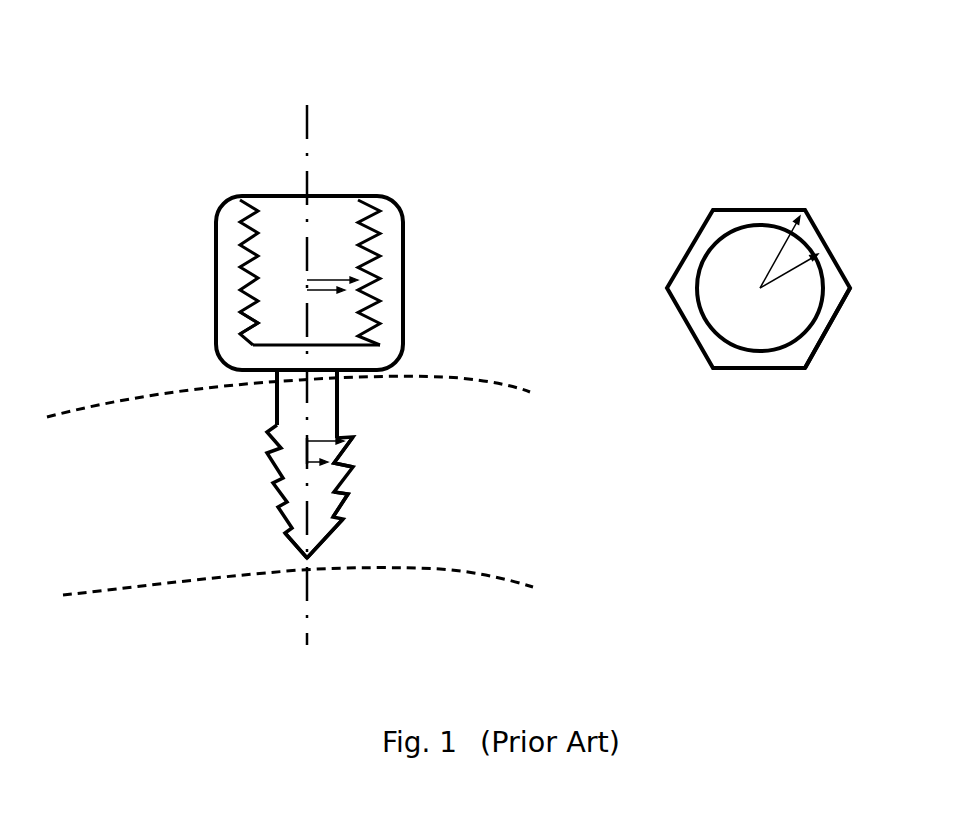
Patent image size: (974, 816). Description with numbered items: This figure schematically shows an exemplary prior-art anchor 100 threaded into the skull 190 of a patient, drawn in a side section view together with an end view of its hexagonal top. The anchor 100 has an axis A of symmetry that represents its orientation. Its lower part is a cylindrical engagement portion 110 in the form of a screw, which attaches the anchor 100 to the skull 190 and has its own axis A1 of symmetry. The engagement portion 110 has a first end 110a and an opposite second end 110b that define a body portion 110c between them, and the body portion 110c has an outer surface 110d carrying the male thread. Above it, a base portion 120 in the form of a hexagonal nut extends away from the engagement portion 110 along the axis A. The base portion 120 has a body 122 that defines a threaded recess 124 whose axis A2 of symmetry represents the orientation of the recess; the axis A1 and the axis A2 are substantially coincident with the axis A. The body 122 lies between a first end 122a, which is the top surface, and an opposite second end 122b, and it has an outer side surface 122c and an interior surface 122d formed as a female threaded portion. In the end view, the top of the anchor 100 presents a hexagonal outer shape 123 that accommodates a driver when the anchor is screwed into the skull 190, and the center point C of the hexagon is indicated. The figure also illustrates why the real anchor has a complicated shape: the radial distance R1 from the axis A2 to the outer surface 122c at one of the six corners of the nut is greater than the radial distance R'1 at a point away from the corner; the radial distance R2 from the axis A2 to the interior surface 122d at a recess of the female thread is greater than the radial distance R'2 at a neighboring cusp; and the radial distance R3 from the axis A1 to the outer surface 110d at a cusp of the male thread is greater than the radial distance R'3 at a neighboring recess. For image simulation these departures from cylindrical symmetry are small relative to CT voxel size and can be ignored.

The anchor 100 is at (546, 77).
The cylindrical engagement portion 110 is at (270, 487).
The first end of engagement portion 110a is at (273, 372).
The second end of engagement portion 110b is at (302, 560).
The body portion 110c is at (340, 465).
The outer surface of body portion 110d is at (347, 498).
The base portion 120 is at (385, 252).
The body of base portion 122 is at (236, 257).
The first end of base portion 122a is at (367, 210).
The second end of base portion 122b is at (386, 369).
The outer side surface 122c is at (372, 290).
The interior surface 122d is at (257, 303).
The hexagonal outer shape 123 is at (735, 207).
The threaded recess 124 is at (322, 252).
The skull 190 is at (495, 382).
The axis of symmetry of anchor A is at (308, 132).
The axis of symmetry of engagement portion A1 is at (312, 597).
The axis of symmetry of threaded recess A2 is at (316, 268).
The center point C is at (302, 197).
The radial distance to outer surface at corner R1 is at (797, 215).
The radial distance to outer surface away from corner R'1 is at (849, 270).
The radial distance to interior surface at recess R2 is at (328, 278).
The radial distance to interior surface at cusp R'2 is at (391, 319).
The radial distance to outer surface at cusp R3 is at (310, 437).
The radial distance to outer surface at recess R'3 is at (375, 480).